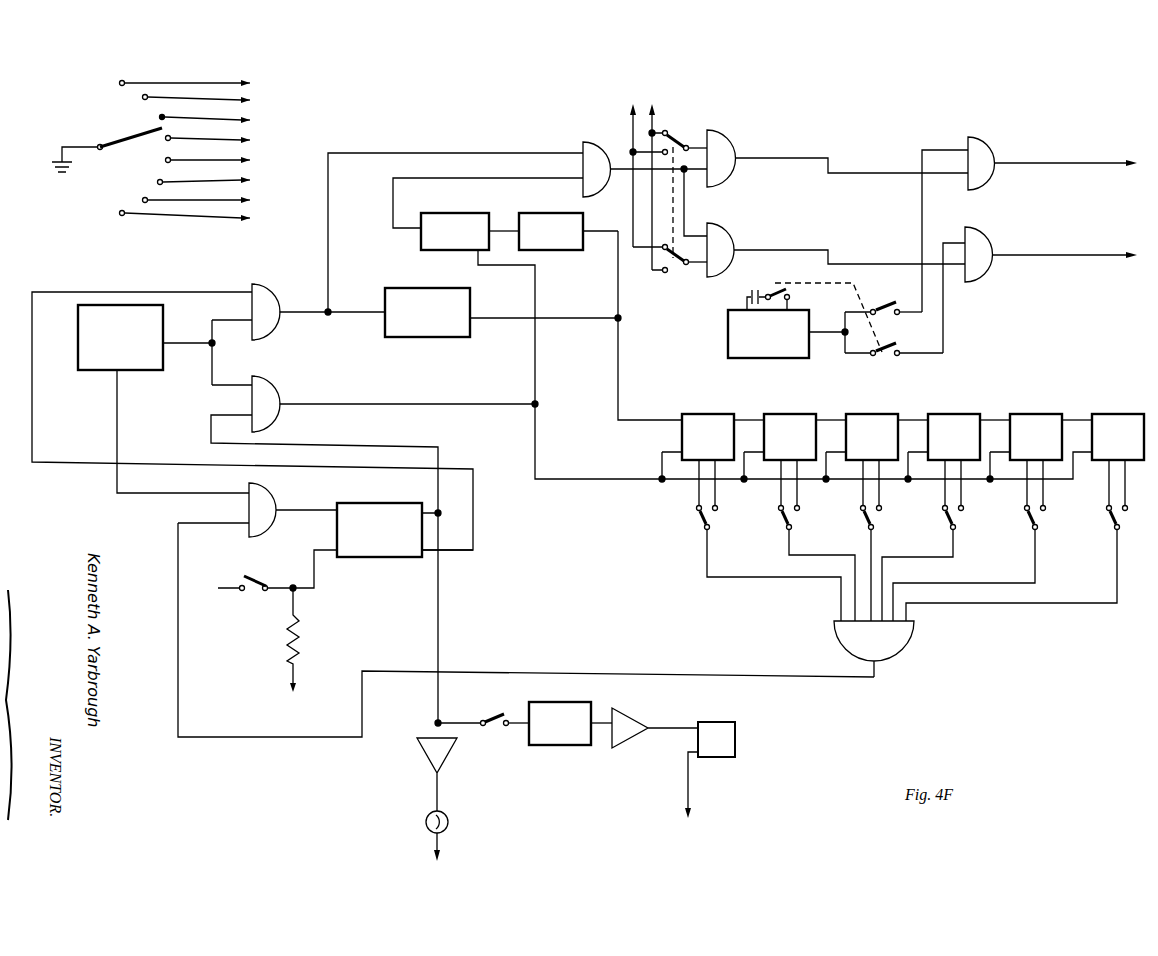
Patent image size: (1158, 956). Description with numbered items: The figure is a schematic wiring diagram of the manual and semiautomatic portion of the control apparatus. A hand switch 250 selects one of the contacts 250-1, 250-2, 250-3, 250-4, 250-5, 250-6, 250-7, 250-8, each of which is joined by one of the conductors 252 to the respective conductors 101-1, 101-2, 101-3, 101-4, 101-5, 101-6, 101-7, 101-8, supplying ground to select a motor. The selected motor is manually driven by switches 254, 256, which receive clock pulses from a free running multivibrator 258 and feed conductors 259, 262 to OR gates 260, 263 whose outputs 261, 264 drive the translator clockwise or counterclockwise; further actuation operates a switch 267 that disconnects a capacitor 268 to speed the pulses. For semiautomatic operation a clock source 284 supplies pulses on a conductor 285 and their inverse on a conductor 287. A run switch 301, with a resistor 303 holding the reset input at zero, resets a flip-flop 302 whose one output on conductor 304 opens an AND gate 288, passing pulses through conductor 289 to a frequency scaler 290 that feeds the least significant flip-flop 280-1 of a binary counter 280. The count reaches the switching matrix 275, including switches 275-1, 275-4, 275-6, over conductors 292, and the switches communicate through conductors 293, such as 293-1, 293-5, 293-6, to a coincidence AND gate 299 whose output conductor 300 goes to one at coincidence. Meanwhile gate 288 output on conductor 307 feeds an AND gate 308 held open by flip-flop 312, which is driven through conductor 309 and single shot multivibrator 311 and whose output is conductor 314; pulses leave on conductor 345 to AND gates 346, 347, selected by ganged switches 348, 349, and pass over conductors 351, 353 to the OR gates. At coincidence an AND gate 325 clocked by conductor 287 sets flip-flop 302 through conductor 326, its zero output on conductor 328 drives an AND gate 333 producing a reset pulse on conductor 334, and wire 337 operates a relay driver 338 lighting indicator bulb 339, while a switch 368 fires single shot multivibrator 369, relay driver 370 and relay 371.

The hand switch 250 is at (96, 146).
The contact 250-1 is at (118, 81).
The contact 250-2 is at (142, 96).
The contact 250-3 is at (160, 116).
The contact 250-4 is at (167, 127).
The contact 250-5 is at (165, 160).
The contact 250-6 is at (157, 182).
The contact 250-7 is at (142, 200).
The contact 250-8 is at (119, 213).
The conductor 101-1 is at (273, 83).
The conductor 101-2 is at (273, 100).
The conductor 101-3 is at (273, 120).
The conductor 101-4 is at (273, 140).
The conductor 101-5 is at (273, 160).
The conductor 101-6 is at (273, 180).
The conductor 101-7 is at (273, 200).
The conductor 101-8 is at (273, 218).
The conductors 252 is at (188, 226).
The conductor 307 is at (370, 150).
The conductor 314 is at (416, 176).
The AND gate 308 is at (590, 141).
The flip-flop 312 is at (433, 213).
The single shot multivibrator 311 is at (572, 212).
The conductor 309 is at (617, 290).
The conductor 289 is at (346, 304).
The AND gate 288 is at (279, 330).
The frequency scaler 290 is at (470, 330).
The AND gate 333 is at (287, 378).
The clock source 284 is at (86, 374).
The conductor 285 is at (186, 350).
The conductor 287 is at (118, 430).
The conductor 328 is at (440, 456).
The conductor 334 is at (546, 482).
The conductor 326 is at (288, 508).
The AND gate 325 is at (268, 533).
The bistable flip-flop 302 is at (386, 560).
The conductor 304 is at (476, 553).
The run switch 301 is at (268, 578).
The resistor 303 is at (290, 642).
The wire 337 is at (439, 632).
The switch 368 is at (492, 718).
The single shot multivibrator 369 is at (563, 702).
The relay driver 370 is at (634, 711).
The relay 371 is at (737, 741).
The relay driver 338 is at (441, 772).
The indicator bulb 339 is at (426, 822).
The flip-flop 280-1 is at (680, 413).
The binary counter 280 is at (652, 438).
The conductors 292 is at (672, 463).
The switch 275-1 is at (696, 513).
The matrix of binary elements 275 is at (686, 548).
The switch 275-4 is at (950, 526).
The switch 275-6 is at (1110, 520).
The conductor 293-1 is at (789, 573).
The conductors 293 is at (820, 600).
The conductor 293-5 is at (983, 583).
The conductor 293-6 is at (1060, 617).
The coincidence AND gate 299 is at (910, 645).
The output conductor 300 is at (787, 675).
The ganged switch 348 is at (678, 133).
The ganged switch 349 is at (671, 284).
The AND gate 346 is at (722, 130).
The conductor 345 is at (690, 205).
The AND gate 347 is at (734, 228).
The conductor 351 is at (789, 157).
The conductor 353 is at (848, 263).
The conductor 259 is at (921, 148).
The OR gate 260 is at (985, 137).
The conductor 261 is at (1034, 162).
The conductor 264 is at (1013, 253).
The OR gate 263 is at (1000, 280).
The conductor 262 is at (944, 337).
The switch 254 is at (885, 325).
The switch 256 is at (886, 363).
The free running multivibrator 258 is at (728, 348).
The capacitor 268 is at (743, 305).
The switch 267 is at (755, 286).